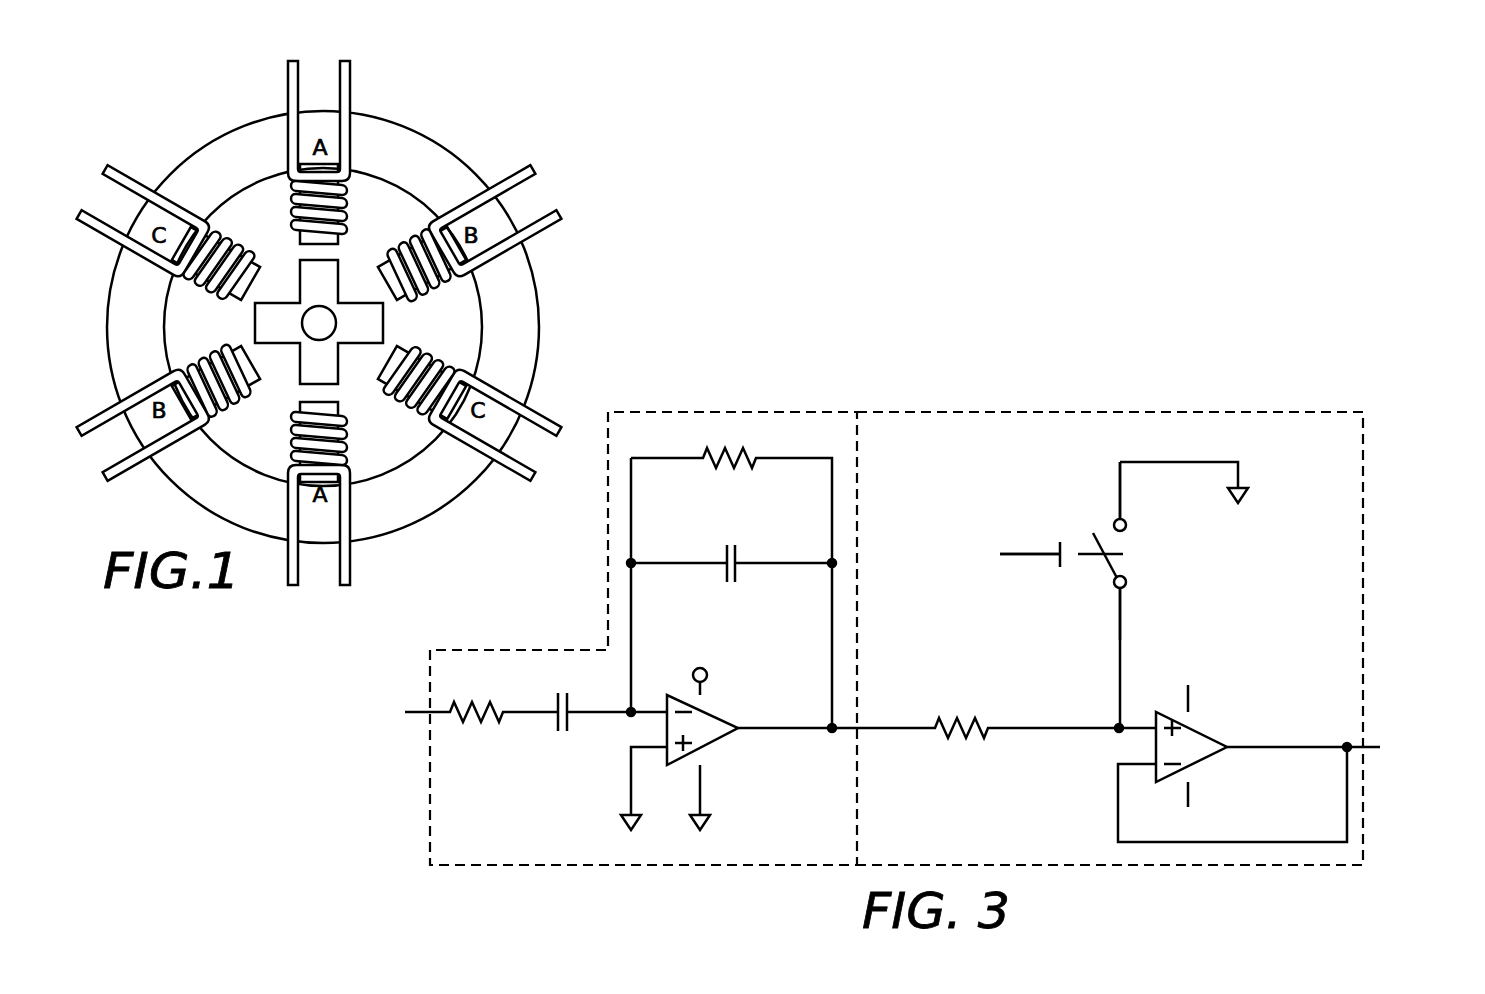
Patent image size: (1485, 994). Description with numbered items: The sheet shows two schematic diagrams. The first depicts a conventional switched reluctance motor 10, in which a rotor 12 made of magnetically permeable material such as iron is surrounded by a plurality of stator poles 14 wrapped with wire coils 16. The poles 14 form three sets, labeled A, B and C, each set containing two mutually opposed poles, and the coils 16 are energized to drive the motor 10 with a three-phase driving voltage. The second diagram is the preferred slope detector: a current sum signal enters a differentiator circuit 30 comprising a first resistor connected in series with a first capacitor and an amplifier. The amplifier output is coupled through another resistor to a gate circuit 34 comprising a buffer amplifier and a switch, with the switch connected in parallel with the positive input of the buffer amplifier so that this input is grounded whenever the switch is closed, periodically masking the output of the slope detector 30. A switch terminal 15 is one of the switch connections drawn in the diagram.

In FIG. 1, the switched reluctance motor 10 is at (460, 150).
In FIG. 1, the rotor 12 is at (383, 318).
In FIG. 1, the stator poles 14 is at (340, 238).
In FIG. 3, the stator poles 14 is at (1138, 490).
In FIG. 1, the wire coils 16 is at (292, 220).
In FIG. 3, the wire coils 16 is at (1030, 540).
In FIG. 3, the differentiator circuit 30 is at (752, 412).
In FIG. 3, the gate circuit 34 is at (1166, 615).
In FIG. 3, the switch terminal 15 is at (1138, 614).